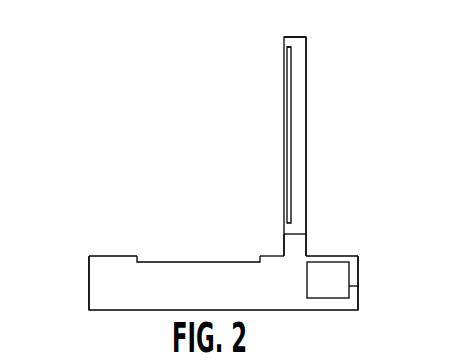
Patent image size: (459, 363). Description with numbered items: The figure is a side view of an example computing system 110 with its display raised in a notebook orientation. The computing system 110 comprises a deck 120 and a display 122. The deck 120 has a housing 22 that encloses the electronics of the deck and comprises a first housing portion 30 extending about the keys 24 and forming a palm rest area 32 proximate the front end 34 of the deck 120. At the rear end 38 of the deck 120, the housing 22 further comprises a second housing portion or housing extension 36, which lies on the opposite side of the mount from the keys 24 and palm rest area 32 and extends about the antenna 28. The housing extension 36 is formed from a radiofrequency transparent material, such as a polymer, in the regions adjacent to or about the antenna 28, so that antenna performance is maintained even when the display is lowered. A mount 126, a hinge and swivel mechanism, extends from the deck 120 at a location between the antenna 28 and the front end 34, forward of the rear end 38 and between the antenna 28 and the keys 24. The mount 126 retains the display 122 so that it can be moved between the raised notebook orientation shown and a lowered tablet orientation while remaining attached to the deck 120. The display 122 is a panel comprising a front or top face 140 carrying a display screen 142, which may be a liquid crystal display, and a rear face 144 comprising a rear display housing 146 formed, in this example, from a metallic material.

The computing system 110 is at (96, 173).
The housing 22 is at (92, 255).
The keys 24 is at (188, 255).
The antenna 28 is at (358, 287).
The first housing portion 30 is at (270, 255).
The palm rest area 32 is at (113, 255).
The front end 34 is at (69, 252).
The housing extension 36 is at (358, 281).
The rear end 38 is at (382, 263).
The deck 120 is at (359, 256).
The display 122 is at (306, 115).
The mount 126 is at (307, 252).
The front face 140 is at (285, 118).
The display screen 142 is at (284, 70).
The rear face 144 is at (306, 63).
The rear display housing 146 is at (306, 155).